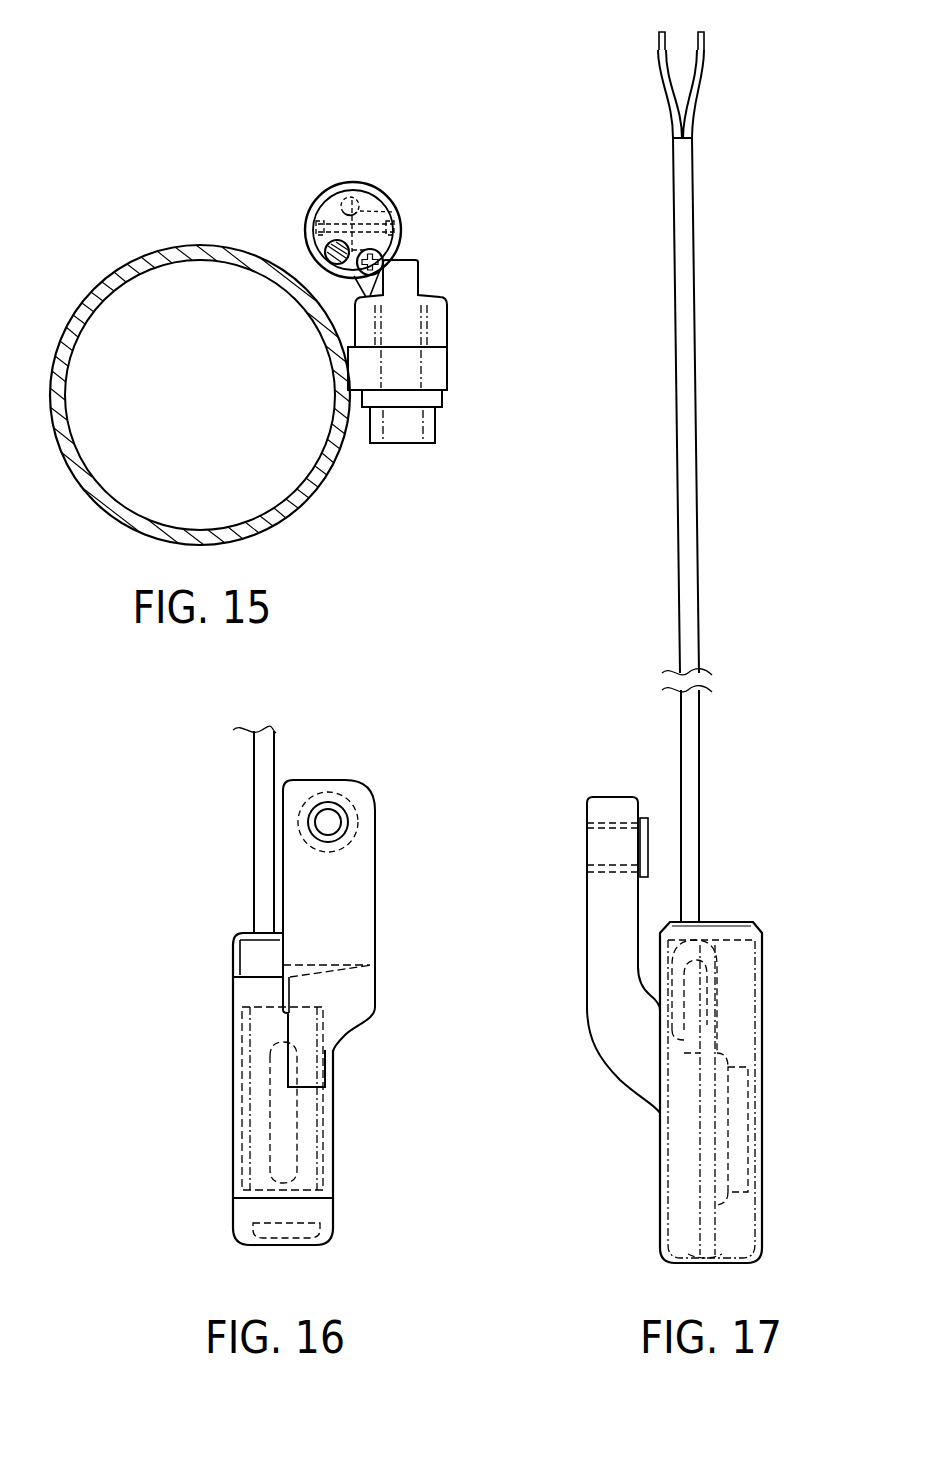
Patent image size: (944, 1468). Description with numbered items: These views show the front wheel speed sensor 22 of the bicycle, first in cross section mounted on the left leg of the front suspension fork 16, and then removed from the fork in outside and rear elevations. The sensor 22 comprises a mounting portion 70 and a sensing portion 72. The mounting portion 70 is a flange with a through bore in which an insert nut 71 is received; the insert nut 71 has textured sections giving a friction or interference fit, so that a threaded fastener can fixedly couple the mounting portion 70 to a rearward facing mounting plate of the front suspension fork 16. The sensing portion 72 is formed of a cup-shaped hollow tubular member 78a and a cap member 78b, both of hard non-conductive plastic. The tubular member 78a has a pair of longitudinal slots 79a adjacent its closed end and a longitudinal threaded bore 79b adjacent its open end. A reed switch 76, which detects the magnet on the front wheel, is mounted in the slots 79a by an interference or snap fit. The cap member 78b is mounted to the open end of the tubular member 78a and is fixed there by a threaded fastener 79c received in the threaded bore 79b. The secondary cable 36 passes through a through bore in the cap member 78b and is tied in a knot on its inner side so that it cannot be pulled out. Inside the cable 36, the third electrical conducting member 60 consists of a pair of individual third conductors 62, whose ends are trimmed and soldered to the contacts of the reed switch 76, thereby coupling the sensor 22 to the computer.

In FIG. 15, the front suspension fork 16 is at (205, 230).
In FIG. 15, the sensor 22 is at (361, 224).
In FIG. 16, the sensor 22 is at (281, 1098).
In FIG. 17, the sensor 22 is at (773, 1044).
In FIG. 16, the secondary cable 36 is at (274, 750).
In FIG. 17, the secondary cable 36 is at (698, 423).
In FIG. 17, the third electrical conducting member 60 is at (719, 74).
In FIG. 17, the third conductors 62 is at (703, 45).
In FIG. 15, the mounting portion 70 is at (460, 320).
In FIG. 16, the mounting portion 70 is at (371, 910).
In FIG. 17, the mounting portion 70 is at (585, 917).
In FIG. 16, the insert nut 71 is at (344, 800).
In FIG. 17, the insert nut 71 is at (648, 837).
In FIG. 15, the sensing portion 72 is at (345, 165).
In FIG. 16, the sensing portion 72 is at (281, 1098).
In FIG. 17, the sensing portion 72 is at (771, 1044).
In FIG. 15, the reed switch 76 is at (397, 210).
In FIG. 16, the reed switch 76 is at (268, 1149).
In FIG. 17, the reed switch 76 is at (727, 1053).
In FIG. 15, the tubular member 78a is at (332, 185).
In FIG. 16, the tubular member 78a is at (233, 1102).
In FIG. 17, the tubular member 78a is at (763, 1213).
In FIG. 16, the cap member 78b is at (240, 937).
In FIG. 17, the cap member 78b is at (742, 920).
In FIG. 15, the longitudinal slots 79a is at (298, 225).
In FIG. 16, the longitudinal slots 79a is at (240, 1213).
In FIG. 17, the longitudinal slots 79a is at (710, 1260).
In FIG. 15, the threaded bore 79b is at (330, 268).
In FIG. 15, the threaded fastener 79c is at (360, 274).